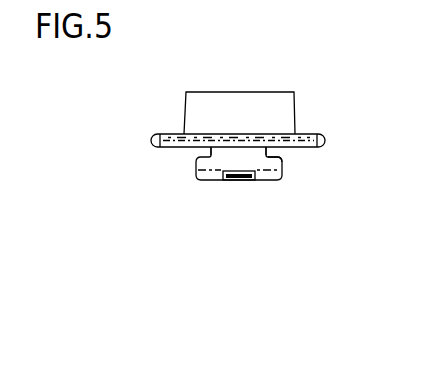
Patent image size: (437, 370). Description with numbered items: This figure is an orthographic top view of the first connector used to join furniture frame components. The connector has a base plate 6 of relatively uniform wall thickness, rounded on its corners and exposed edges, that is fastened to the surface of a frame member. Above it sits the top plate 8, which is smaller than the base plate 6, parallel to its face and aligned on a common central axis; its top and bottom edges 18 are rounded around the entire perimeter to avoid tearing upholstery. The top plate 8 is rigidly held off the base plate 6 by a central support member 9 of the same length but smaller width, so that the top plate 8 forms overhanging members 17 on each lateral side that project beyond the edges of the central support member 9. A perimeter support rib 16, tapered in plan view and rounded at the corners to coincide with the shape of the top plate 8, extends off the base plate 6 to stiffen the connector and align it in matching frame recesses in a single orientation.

The base plate 6 is at (321, 142).
The perimeter support rib 16 is at (195, 115).
The top plate 8 is at (198, 167).
The central support member 9 is at (249, 156).
The top and bottom edges 18 is at (200, 177).
The overhanging members 17 is at (275, 157).